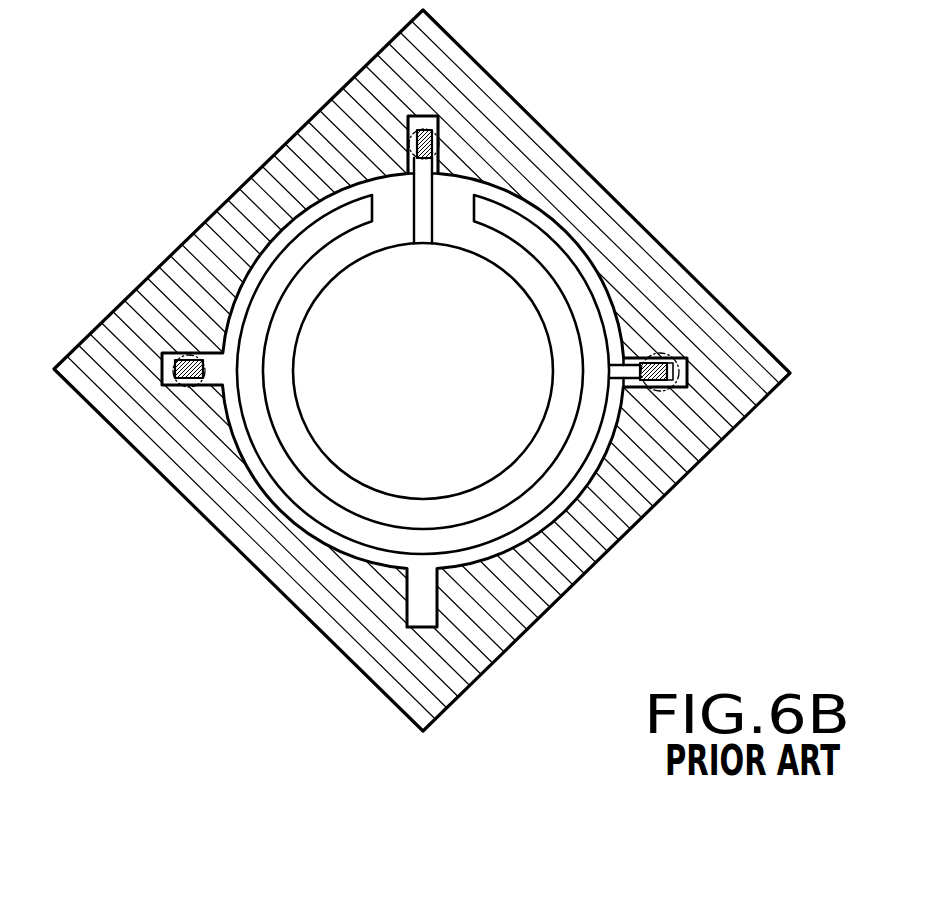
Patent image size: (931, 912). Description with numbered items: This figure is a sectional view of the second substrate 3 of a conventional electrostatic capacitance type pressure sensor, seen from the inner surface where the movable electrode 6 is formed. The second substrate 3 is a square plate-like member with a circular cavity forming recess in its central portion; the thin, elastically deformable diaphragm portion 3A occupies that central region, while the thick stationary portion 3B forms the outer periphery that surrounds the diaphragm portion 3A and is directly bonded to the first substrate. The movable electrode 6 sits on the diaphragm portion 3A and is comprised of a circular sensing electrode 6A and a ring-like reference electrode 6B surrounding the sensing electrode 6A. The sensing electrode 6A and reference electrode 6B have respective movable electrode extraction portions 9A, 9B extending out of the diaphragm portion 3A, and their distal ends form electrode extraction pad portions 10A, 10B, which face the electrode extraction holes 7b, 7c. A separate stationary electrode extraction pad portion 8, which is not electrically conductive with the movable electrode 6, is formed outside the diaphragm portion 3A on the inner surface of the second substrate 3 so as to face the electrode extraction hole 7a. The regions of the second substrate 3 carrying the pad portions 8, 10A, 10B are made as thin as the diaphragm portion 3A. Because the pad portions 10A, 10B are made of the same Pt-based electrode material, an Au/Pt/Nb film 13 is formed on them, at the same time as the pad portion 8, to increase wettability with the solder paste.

The second substrate 3 is at (487, 337).
The diaphragm portion 3A is at (563, 422).
The stationary portion 3B is at (627, 515).
The movable electrode 6 is at (422, 370).
The sensing electrode 6A is at (268, 278).
The reference electrode 6B is at (330, 292).
The electrode extraction hole 7a is at (201, 383).
The electrode extraction hole 7b is at (672, 356).
The electrode extraction hole 7c is at (440, 127).
The stationary electrode extraction pad portion 8 is at (183, 388).
The movable electrode extraction portion 9A is at (630, 350).
The movable electrode extraction portion 9B is at (425, 207).
The electrode extraction pad portion 10A is at (680, 366).
The electrode extraction pad portion 10B is at (437, 130).
The Au/Pt/Nb film 13 is at (406, 128).